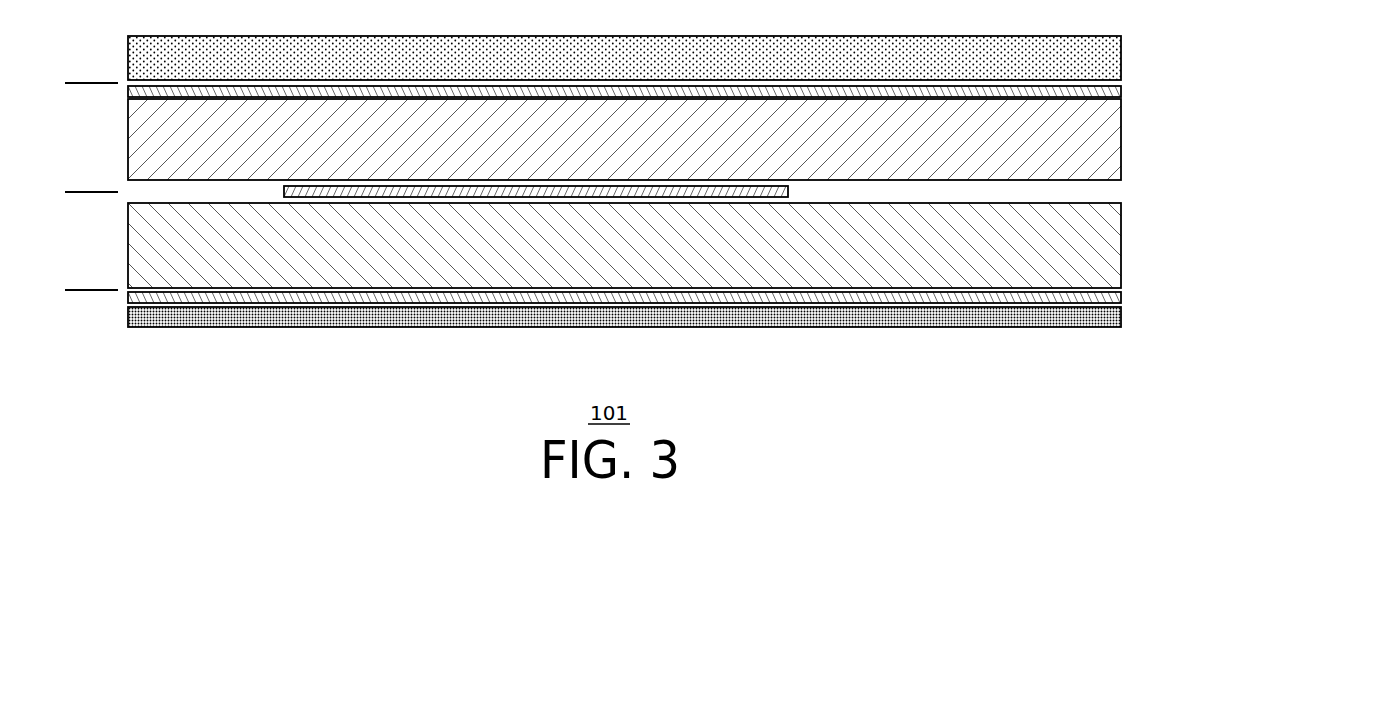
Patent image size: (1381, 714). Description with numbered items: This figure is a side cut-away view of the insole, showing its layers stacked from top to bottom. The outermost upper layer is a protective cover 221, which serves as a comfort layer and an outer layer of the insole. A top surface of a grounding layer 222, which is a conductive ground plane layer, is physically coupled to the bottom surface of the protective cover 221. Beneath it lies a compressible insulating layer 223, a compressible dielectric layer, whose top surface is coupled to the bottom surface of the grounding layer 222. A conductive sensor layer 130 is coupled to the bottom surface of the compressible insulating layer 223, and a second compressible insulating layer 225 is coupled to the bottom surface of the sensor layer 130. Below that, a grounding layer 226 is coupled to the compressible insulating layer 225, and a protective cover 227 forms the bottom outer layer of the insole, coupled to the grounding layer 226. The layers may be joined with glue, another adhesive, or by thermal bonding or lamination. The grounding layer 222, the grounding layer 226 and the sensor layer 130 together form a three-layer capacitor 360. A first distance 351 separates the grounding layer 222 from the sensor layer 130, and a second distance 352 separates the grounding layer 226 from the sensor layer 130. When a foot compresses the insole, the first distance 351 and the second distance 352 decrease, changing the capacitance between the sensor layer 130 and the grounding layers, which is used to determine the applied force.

The sensor layer 130 is at (1146, 190).
The protective cover 221 is at (1109, 63).
The grounding layer 222 is at (1110, 91).
The compressible insulating layer 223 is at (1105, 137).
The compressible insulating layer 225 is at (1105, 245).
The grounding layer 226 is at (1109, 297).
The protective cover 227 is at (1110, 317).
The first distance 351 is at (84, 94).
The second distance 352 is at (84, 204).
The three-layer capacitor 360 is at (1283, 112).